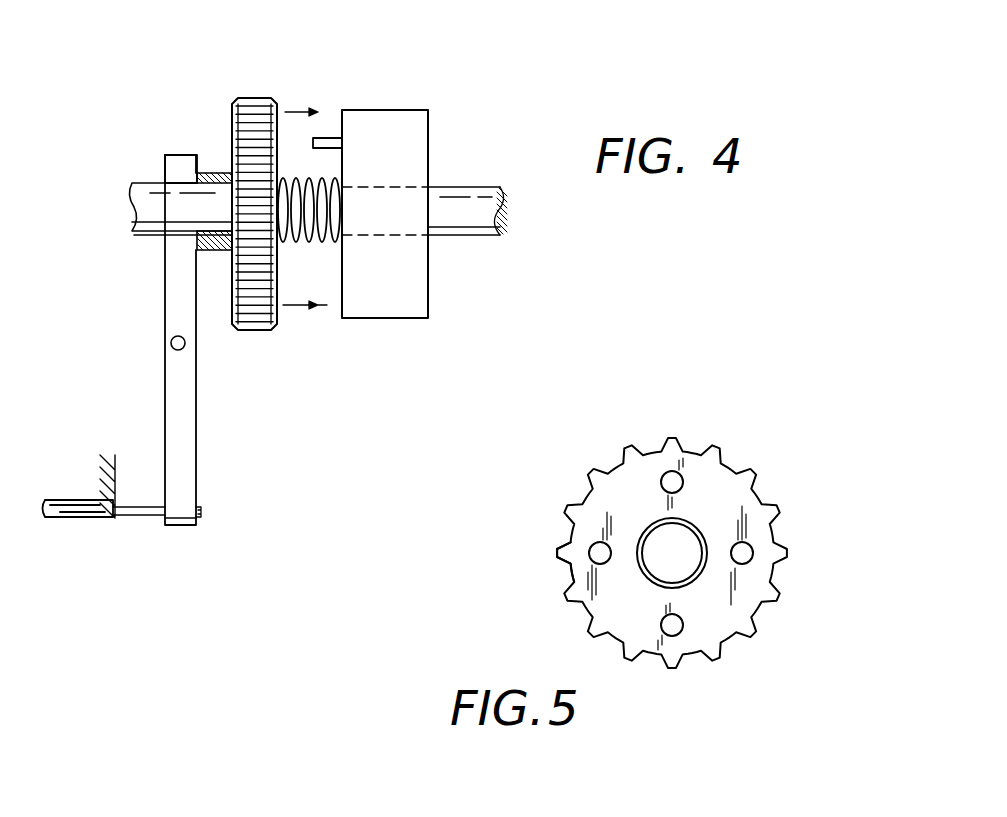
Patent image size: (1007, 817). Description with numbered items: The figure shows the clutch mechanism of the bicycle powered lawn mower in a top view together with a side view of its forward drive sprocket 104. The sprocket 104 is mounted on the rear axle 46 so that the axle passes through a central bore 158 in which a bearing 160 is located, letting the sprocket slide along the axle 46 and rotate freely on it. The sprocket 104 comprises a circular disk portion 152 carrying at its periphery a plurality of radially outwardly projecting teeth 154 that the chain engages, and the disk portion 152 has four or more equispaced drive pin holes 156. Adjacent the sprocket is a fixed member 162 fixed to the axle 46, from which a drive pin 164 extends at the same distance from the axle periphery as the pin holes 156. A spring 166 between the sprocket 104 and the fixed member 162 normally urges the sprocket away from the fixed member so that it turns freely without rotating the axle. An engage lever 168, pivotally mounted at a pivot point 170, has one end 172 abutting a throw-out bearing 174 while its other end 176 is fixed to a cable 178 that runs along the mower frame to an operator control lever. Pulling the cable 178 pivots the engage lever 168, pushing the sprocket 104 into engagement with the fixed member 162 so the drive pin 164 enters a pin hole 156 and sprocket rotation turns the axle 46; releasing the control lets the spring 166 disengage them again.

In FIG. 4, the rear axle 46 is at (467, 217).
In FIG. 4, the forward drive sprocket 104 is at (257, 98).
In FIG. 5, the forward drive sprocket 104 is at (575, 490).
In FIG. 5, the circular disk portion 152 is at (758, 580).
In FIG. 5, the teeth 154 is at (561, 553).
In FIG. 5, the drive pin holes 156 is at (752, 550).
In FIG. 5, the bore 158 is at (685, 577).
In FIG. 5, the bearing 160 is at (670, 562).
In FIG. 4, the fixed member 162 is at (390, 110).
In FIG. 4, the drive pin 164 is at (325, 137).
In FIG. 4, the spring 166 is at (307, 243).
In FIG. 4, the engage lever 168 is at (187, 422).
In FIG. 4, the pivot point 170 is at (171, 340).
In FIG. 4, the one end of engage lever 172 is at (178, 155).
In FIG. 4, the throw-out bearing 174 is at (217, 250).
In FIG. 4, the other end of engage lever 176 is at (180, 513).
In FIG. 4, the cable 178 is at (80, 522).